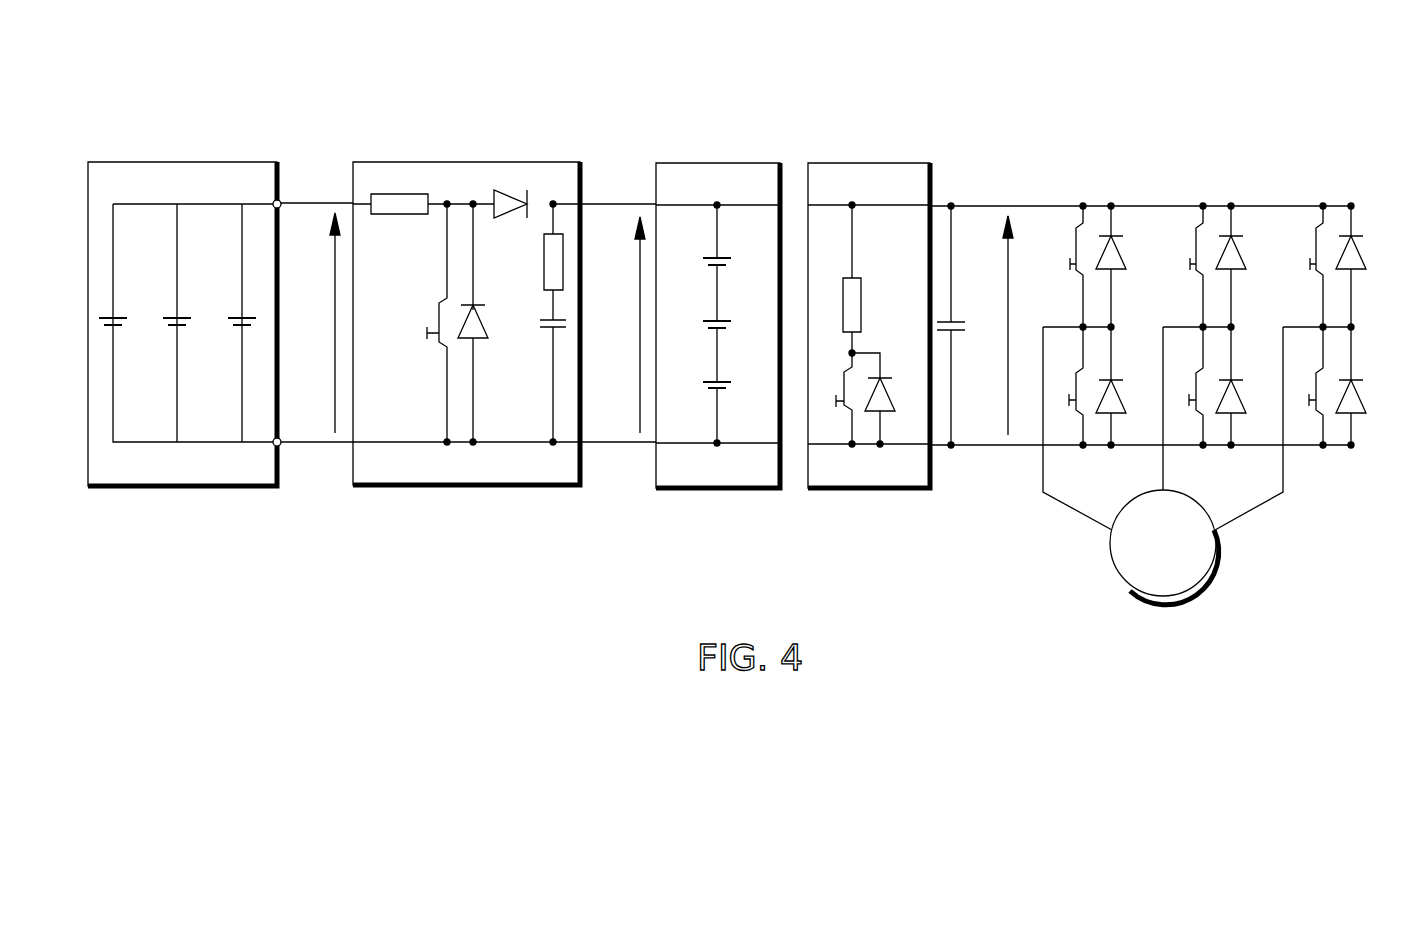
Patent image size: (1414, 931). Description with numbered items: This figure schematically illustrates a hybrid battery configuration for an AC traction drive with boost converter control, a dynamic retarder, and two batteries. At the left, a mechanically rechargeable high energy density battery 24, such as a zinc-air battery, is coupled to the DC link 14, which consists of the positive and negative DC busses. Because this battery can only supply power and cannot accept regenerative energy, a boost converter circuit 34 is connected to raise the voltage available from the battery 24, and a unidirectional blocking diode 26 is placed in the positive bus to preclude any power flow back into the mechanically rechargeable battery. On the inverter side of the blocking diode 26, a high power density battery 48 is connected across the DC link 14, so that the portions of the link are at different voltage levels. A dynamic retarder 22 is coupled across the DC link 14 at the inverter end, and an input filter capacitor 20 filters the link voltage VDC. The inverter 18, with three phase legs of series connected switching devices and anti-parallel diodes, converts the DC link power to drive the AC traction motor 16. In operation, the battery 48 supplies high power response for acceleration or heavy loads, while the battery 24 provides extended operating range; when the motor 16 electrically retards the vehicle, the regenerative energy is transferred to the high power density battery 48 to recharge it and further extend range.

The DC link 14 is at (332, 142).
The high energy density battery 24 is at (227, 161).
The boost converter circuit 34 is at (460, 162).
The diode 26 is at (516, 200).
The high power density battery 48 is at (746, 163).
The dynamic retarder 22 is at (908, 163).
The input filter capacitor 20 is at (962, 333).
The inverter 18 is at (1360, 165).
The motor 16 is at (1212, 557).